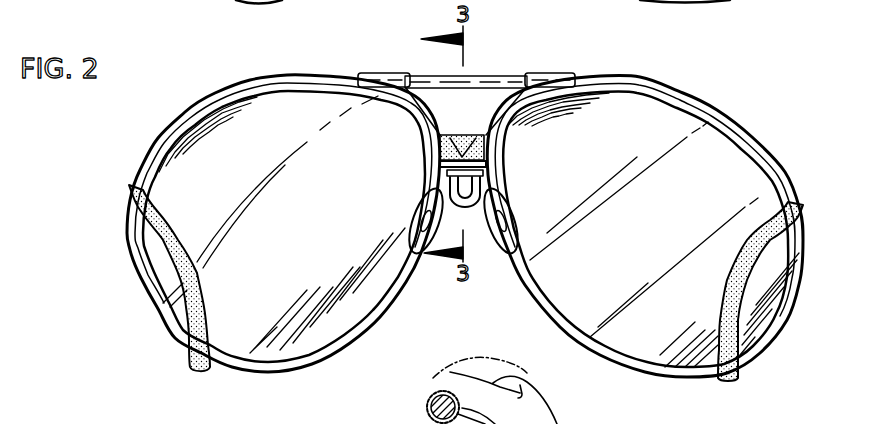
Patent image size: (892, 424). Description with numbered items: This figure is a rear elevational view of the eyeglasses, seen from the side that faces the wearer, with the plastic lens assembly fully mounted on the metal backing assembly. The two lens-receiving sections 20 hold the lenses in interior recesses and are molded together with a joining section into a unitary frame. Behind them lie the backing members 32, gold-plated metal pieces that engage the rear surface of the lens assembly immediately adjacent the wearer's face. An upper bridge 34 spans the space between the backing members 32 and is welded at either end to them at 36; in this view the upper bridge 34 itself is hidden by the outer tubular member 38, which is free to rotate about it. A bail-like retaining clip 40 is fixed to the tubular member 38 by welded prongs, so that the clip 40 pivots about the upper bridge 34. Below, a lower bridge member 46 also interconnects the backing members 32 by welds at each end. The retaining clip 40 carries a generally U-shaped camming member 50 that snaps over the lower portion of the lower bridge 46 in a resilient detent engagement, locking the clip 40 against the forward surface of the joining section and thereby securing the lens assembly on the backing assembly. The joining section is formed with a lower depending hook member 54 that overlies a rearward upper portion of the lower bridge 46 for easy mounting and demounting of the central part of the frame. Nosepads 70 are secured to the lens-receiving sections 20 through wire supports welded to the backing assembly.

The lens-receiving section 20 is at (268, 372).
The backing member 32 is at (222, 96).
The upper bridge 34 is at (425, 402).
The weld 36 is at (378, 75).
The outer tubular member 38 is at (487, 78).
The retaining clip 40 is at (448, 200).
The lower bridge member 46 is at (438, 165).
The camming member 50 is at (485, 172).
The depending hook member 54 is at (420, 145).
The nosepad 70 is at (425, 250).